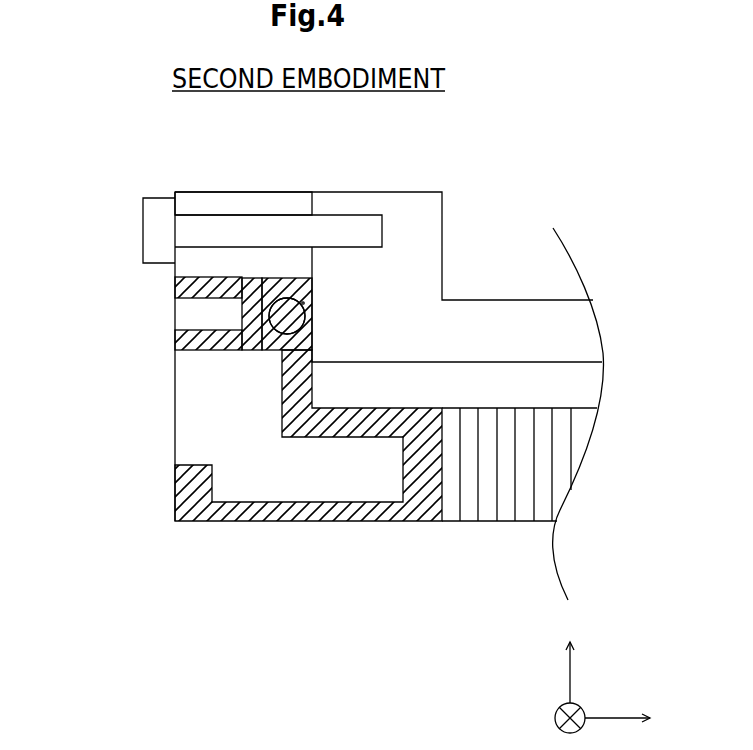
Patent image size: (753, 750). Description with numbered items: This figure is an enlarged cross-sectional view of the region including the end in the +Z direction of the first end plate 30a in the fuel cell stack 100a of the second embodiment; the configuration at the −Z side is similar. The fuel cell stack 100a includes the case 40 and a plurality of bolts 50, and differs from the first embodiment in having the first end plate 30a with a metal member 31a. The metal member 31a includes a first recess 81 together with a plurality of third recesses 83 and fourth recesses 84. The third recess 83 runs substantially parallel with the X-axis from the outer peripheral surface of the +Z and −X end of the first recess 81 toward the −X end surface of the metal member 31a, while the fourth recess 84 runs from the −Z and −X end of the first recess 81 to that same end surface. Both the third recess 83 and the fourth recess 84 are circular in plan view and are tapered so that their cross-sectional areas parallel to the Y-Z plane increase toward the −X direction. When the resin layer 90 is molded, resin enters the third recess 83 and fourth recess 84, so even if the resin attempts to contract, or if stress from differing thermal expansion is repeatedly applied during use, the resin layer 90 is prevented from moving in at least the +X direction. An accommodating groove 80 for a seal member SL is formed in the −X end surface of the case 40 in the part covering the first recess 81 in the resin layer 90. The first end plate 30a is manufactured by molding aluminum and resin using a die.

The fuel cell stack 100a is at (108, 194).
The first end plate 30a is at (202, 187).
The metal member 31a is at (240, 203).
The bolts 50 is at (158, 234).
The third recess 83 is at (206, 274).
The fourth recess 84 is at (193, 359).
The first recess 81 is at (257, 359).
The accommodating groove 80 is at (305, 336).
The seal member SL is at (305, 303).
The case 40 is at (488, 315).
The resin layer 90 is at (176, 503).